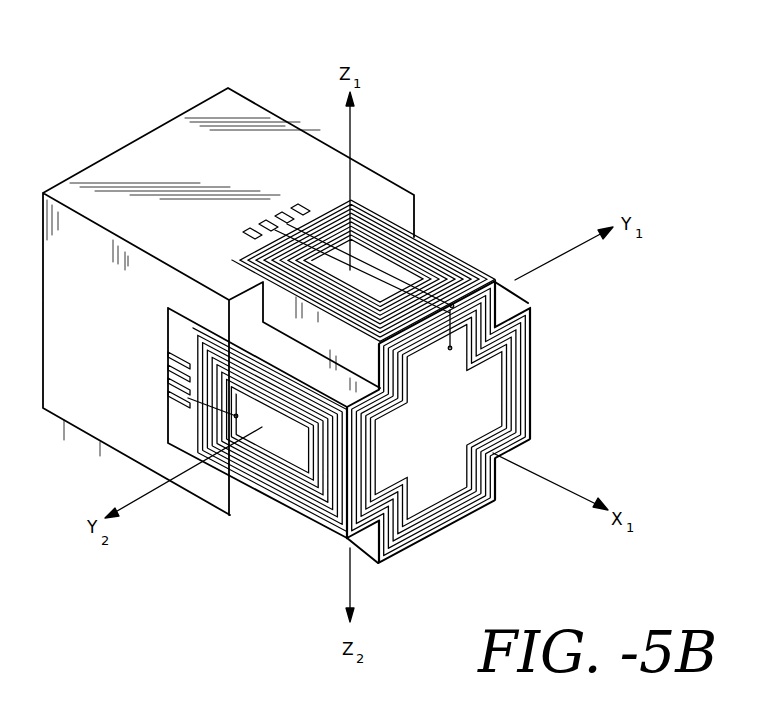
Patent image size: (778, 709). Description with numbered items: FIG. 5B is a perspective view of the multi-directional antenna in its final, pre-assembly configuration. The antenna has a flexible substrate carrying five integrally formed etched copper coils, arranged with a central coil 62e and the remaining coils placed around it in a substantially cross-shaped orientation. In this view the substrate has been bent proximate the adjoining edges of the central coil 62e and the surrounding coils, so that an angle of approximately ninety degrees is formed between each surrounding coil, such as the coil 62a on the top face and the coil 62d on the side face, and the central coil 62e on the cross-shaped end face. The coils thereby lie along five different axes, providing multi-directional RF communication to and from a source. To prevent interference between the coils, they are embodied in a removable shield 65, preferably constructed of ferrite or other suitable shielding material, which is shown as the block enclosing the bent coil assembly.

The removable shield 65 is at (207, 97).
The coil 62a is at (418, 245).
The coil 62d is at (310, 510).
The central coil 62e is at (522, 378).